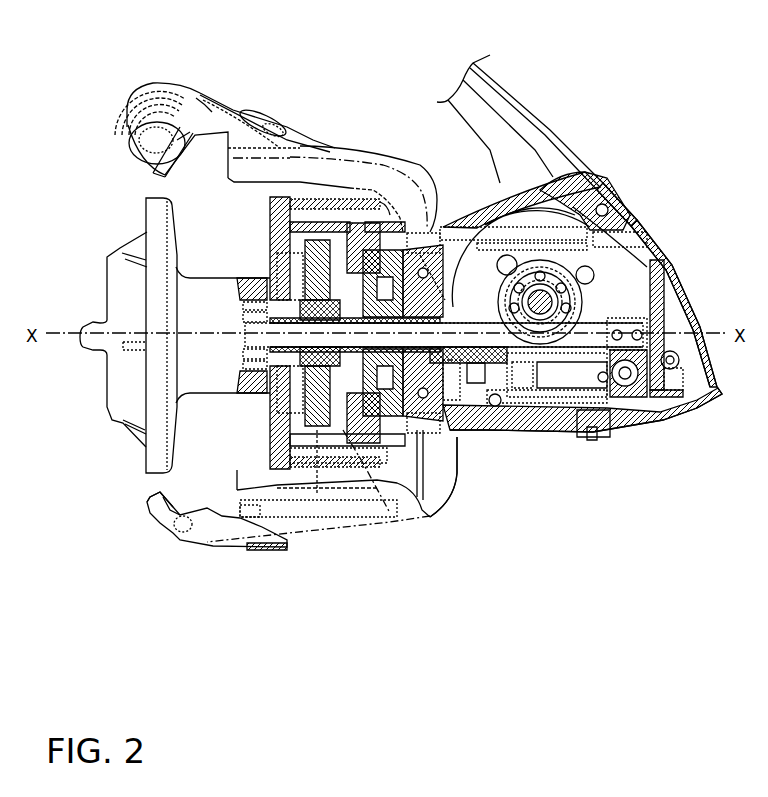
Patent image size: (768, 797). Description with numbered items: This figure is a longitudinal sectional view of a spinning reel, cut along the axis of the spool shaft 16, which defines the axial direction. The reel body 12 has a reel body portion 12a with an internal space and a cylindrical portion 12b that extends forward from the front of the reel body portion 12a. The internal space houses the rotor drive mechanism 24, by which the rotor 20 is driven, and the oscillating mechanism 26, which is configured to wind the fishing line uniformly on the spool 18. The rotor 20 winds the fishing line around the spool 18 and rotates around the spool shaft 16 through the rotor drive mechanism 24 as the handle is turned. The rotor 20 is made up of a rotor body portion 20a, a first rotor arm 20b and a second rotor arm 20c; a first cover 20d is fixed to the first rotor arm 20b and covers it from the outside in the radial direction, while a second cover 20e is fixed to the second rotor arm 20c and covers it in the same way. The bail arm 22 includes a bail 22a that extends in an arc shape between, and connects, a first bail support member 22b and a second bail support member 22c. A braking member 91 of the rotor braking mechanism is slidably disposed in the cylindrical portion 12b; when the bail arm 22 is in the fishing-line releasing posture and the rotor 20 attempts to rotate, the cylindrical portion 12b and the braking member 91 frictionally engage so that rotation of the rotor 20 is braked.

The reel body 12 is at (589, 155).
The reel body portion 12a is at (638, 220).
The cylindrical portion 12b is at (387, 240).
The spool shaft 16 is at (546, 363).
The spool 18 is at (208, 268).
The rotor 20 is at (427, 520).
The rotor body portion 20a is at (395, 500).
The first rotor arm 20b is at (317, 493).
The second rotor arm 20c is at (327, 152).
The first cover 20d is at (460, 473).
The second cover 20e is at (347, 158).
The bail arm 22 is at (157, 72).
The bail 22a is at (160, 510).
The first bail support member 22b is at (217, 540).
The second bail support member 22c is at (203, 100).
The rotor drive mechanism 24 is at (633, 310).
The oscillating mechanism 26 is at (567, 407).
The braking member 91 is at (423, 232).